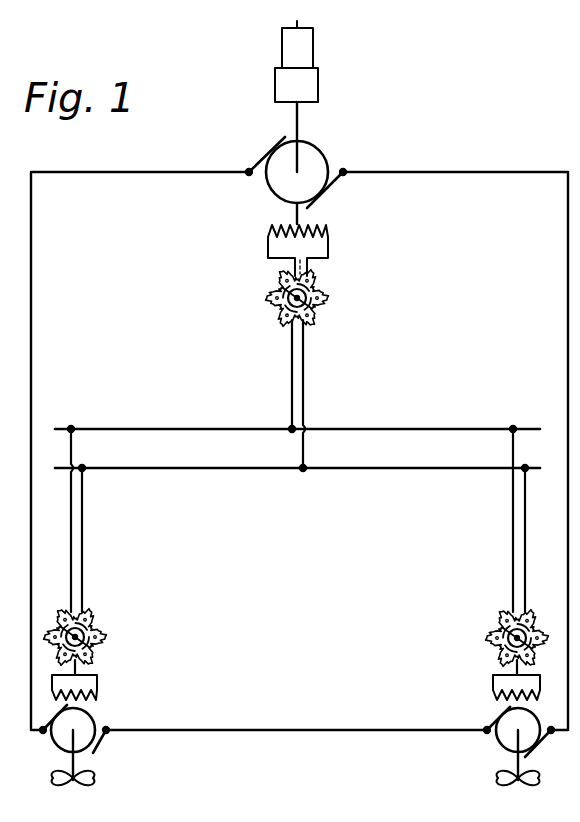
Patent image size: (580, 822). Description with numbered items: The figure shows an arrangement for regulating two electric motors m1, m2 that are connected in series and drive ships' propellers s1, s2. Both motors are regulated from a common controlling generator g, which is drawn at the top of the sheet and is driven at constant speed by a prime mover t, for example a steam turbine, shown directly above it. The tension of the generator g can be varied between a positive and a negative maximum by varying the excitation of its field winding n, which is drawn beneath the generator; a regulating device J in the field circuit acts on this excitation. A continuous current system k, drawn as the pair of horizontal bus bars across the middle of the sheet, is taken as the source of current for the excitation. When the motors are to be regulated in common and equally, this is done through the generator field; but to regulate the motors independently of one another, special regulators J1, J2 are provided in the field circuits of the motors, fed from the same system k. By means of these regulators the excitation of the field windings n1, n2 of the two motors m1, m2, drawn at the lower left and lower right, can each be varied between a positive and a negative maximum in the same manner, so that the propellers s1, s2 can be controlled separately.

The prime mover t is at (328, 76).
The controlling generator g is at (335, 138).
The field winding n is at (334, 237).
The motor J is at (333, 309).
The continuous current system k is at (318, 462).
The motor J1 is at (108, 631).
The field winding n1 is at (97, 681).
The motor m1 is at (100, 748).
The ship's propeller s1 is at (84, 789).
The motor J2 is at (425, 643).
The field winding n2 is at (493, 682).
The motor m2 is at (486, 746).
The ship's propeller s2 is at (496, 787).